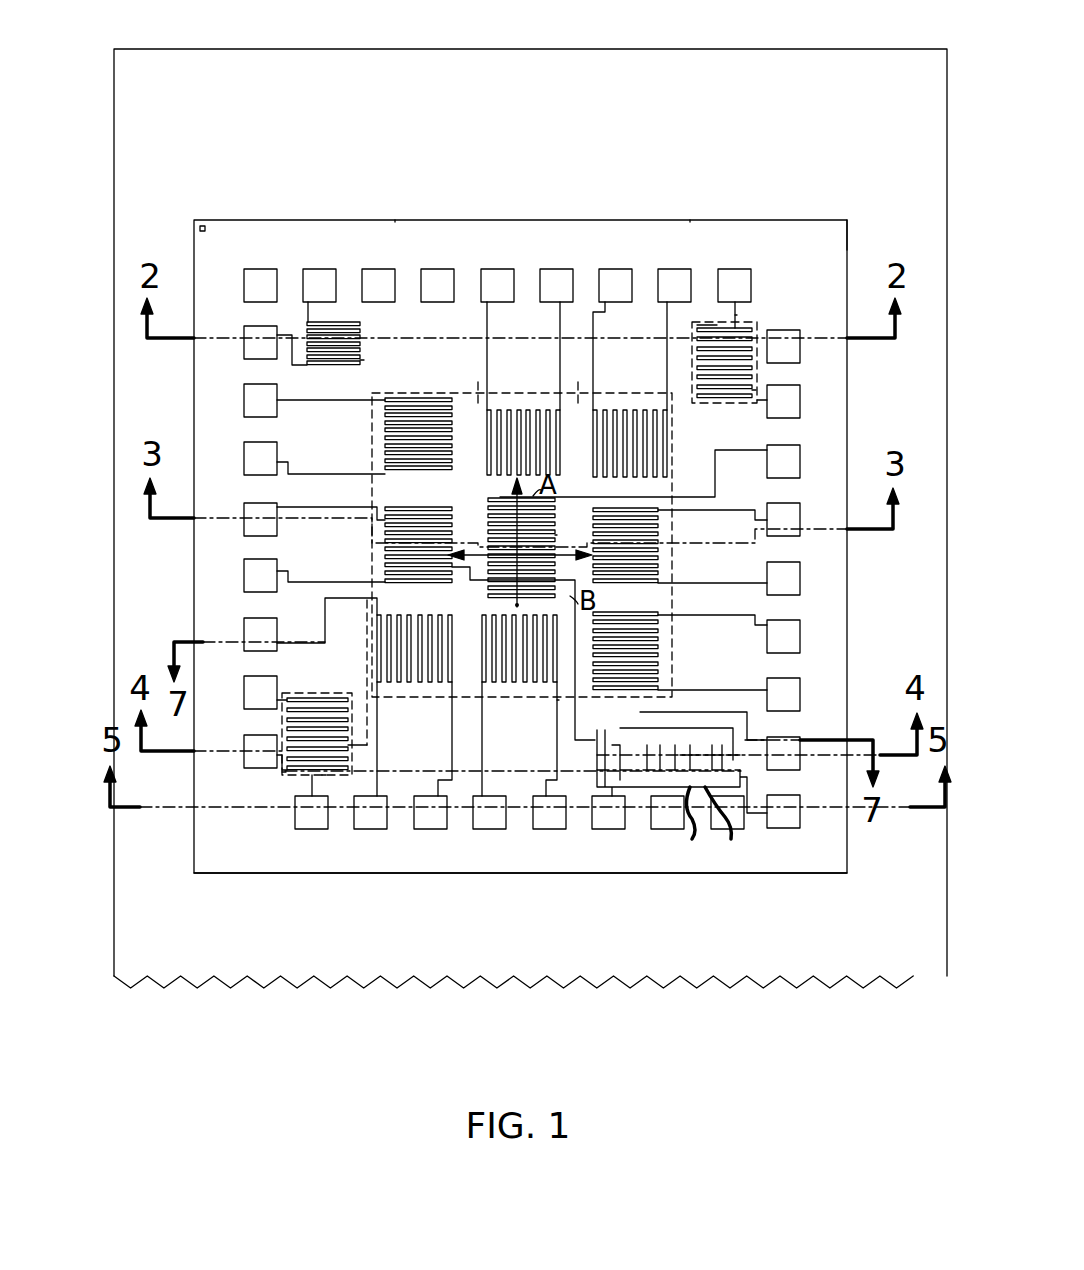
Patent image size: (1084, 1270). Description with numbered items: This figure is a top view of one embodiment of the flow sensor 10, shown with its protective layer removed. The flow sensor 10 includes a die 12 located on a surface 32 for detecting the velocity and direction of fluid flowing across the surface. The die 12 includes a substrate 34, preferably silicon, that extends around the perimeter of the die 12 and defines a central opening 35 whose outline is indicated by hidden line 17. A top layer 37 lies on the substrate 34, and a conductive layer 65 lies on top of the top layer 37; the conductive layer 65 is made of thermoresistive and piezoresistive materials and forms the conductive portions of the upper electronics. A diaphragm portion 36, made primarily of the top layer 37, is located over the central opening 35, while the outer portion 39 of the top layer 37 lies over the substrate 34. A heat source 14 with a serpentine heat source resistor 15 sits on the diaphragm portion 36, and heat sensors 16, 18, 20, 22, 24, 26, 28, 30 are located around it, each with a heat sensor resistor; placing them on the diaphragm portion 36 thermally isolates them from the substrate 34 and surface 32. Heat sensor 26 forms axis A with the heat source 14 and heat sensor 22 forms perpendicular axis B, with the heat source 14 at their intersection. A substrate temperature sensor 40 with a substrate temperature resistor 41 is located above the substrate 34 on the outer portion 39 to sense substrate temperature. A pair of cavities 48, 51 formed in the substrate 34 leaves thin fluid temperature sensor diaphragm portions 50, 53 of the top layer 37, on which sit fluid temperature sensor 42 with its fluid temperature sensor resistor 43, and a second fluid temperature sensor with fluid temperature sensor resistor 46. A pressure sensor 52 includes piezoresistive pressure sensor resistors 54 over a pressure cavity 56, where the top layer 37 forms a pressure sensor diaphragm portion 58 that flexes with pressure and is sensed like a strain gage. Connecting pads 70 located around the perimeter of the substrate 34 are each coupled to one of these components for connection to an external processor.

The flow sensor 10 is at (303, 182).
The die 12 is at (690, 220).
The heat source 14 is at (472, 522).
The heat source resistor 15 is at (556, 538).
The heat sensor 16 is at (411, 688).
The hidden line 17 is at (526, 704).
The heat sensor 18 is at (507, 688).
The heat sensor 20 is at (670, 652).
The heat sensor 22 is at (666, 564).
The heat sensor 24 is at (620, 406).
The heat sensor 26 is at (512, 408).
The heat sensor 28 is at (424, 396).
The heat sensor 30 is at (372, 552).
The surface 32 is at (330, 47).
The substrate 34 is at (800, 220).
The central opening 35 is at (479, 377).
The diaphragm portion 36 is at (362, 500).
The top layer 37 is at (396, 220).
The outer portion 39 is at (838, 240).
The substrate temperature sensor 40 is at (352, 326).
The substrate temperature resistor 41 is at (364, 356).
The fluid temperature sensor 42 is at (748, 324).
The fluid temperature sensor resistor 43 is at (726, 320).
The fluid temperature sensor resistor 46 is at (270, 728).
The cavity 48 is at (776, 322).
The fluid temperature sensor diaphragm portion 50 is at (770, 370).
The cavity 51 is at (324, 780).
The pressure sensor 52 is at (760, 836).
The fluid temperature sensor diaphragm portion 53 is at (280, 784).
The pressure sensor resistors 54 is at (689, 827).
The pressure cavity 56 is at (727, 827).
The pressure sensor diaphragm portion 58 is at (680, 728).
The conductive layer 65 is at (245, 864).
The connecting pads 70 is at (260, 272).